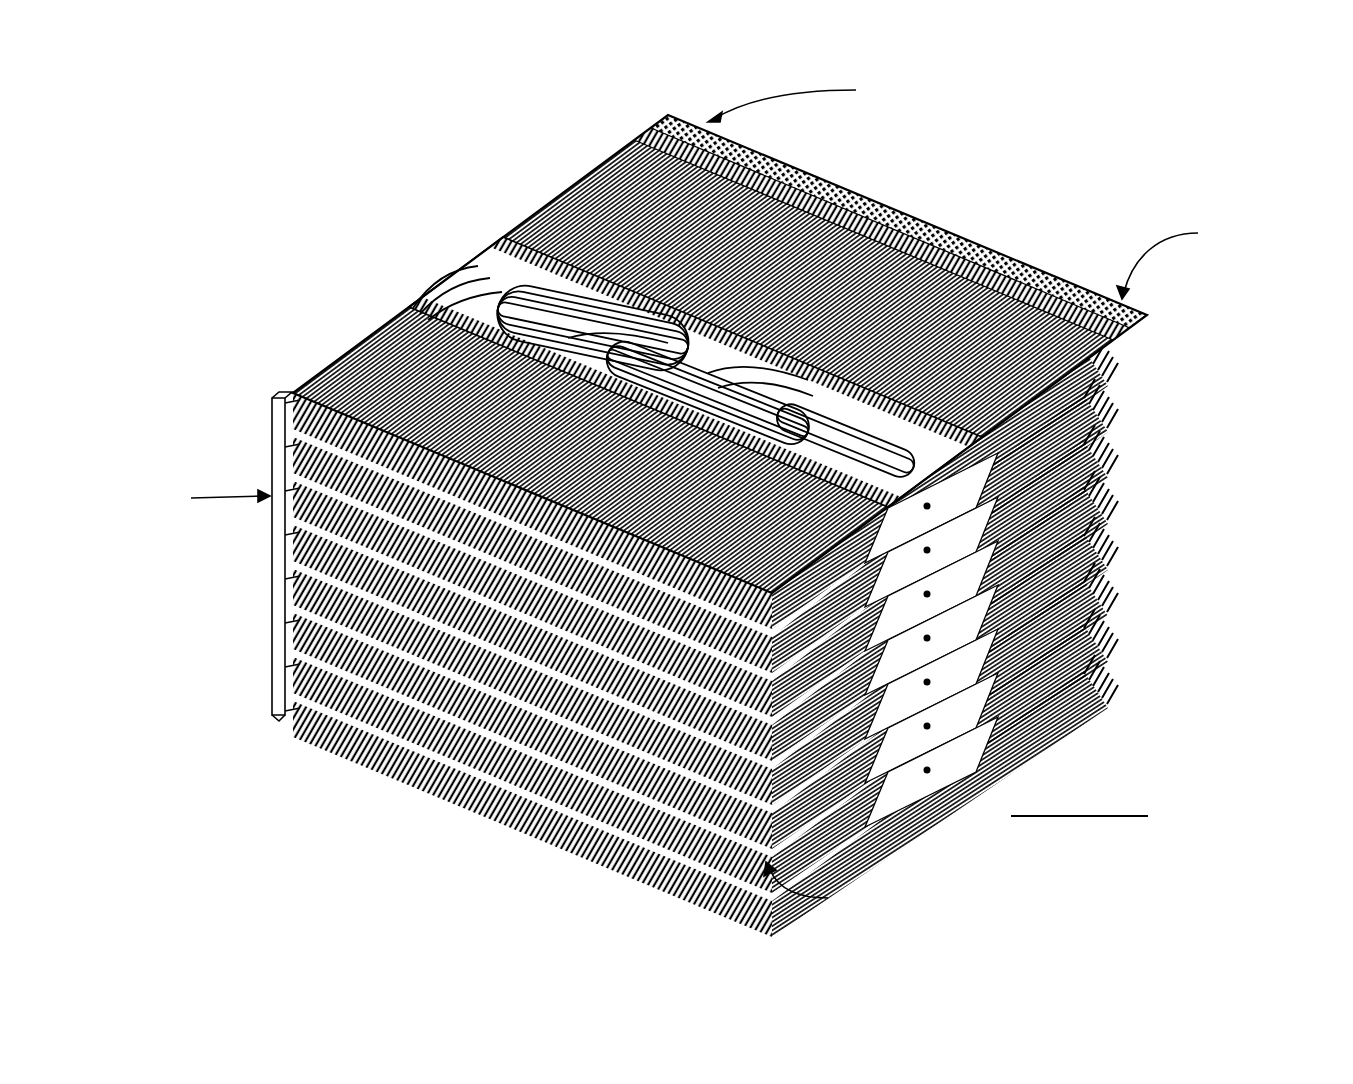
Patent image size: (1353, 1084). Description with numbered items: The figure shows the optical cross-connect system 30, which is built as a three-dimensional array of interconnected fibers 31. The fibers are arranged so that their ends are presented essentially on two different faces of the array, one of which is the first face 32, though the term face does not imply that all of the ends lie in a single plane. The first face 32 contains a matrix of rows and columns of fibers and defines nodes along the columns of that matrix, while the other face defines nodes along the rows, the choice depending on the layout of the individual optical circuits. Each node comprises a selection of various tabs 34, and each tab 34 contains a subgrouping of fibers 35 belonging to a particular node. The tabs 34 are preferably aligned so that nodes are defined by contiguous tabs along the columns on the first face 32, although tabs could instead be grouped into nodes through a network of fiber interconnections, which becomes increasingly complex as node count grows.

The optical cross-connect system 30 is at (418, 200).
The interconnected fibers 31 is at (928, 220).
The first face 32 is at (263, 632).
The tab 34 is at (287, 390).
The subgrouping of fibers 35 is at (263, 397).